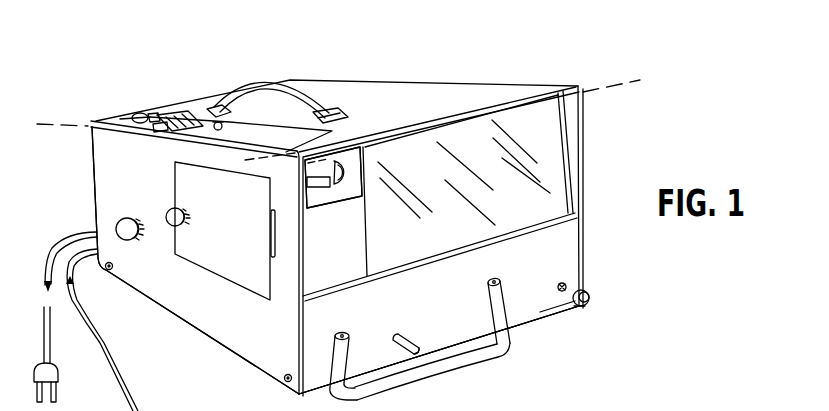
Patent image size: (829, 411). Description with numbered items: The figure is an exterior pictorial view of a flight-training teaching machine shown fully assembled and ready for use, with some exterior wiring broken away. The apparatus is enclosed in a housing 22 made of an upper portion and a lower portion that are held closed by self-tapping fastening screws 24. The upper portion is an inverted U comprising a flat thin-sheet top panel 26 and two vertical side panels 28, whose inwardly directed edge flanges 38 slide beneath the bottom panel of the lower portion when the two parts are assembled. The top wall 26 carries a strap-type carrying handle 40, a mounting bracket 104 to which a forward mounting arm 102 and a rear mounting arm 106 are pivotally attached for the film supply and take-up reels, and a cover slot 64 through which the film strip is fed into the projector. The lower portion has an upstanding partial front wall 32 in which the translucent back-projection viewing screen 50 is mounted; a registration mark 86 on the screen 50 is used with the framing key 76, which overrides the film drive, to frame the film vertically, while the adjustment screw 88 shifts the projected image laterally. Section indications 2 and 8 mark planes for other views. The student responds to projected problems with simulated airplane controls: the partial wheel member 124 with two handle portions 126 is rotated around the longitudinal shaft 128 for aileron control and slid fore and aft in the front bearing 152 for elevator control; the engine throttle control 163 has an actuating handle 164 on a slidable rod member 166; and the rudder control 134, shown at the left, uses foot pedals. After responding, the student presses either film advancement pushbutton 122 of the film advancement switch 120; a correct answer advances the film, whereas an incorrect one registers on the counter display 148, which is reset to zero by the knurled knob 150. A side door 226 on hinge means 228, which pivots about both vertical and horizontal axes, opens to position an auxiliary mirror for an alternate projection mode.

The section line 2- 2 is at (48, 123).
The section line 8- 8 is at (150, 208).
The housing 22 is at (494, 78).
The self-tapping fastening screws 24 is at (112, 271).
The top panel portion 26 is at (419, 95).
The side panel portions 28 is at (585, 180).
The partial front wall means 32 is at (558, 251).
The edge flanges 38 is at (579, 311).
The carrying handle 40 is at (293, 83).
The viewing screen means 50 is at (440, 196).
The cover slot 64 is at (209, 107).
The framing key member 76 is at (128, 218).
The registration mark 86 is at (504, 156).
The adjustment screw 88 is at (354, 238).
The forward mounting arm 102 is at (178, 110).
The mounting bracket 104 is at (160, 131).
The rear mounting arm 106 is at (153, 110).
The film advancement switch means 120 is at (434, 322).
The film advancement pushbuttons 122 is at (347, 308).
The partial wheel simulating member 124 is at (442, 355).
The handle portions 126 is at (347, 350).
The longitudinal shaft member 128 is at (421, 345).
The rudder control means 134 is at (125, 321).
The counter indicia display means 148 is at (320, 190).
The reset knob 150 is at (342, 173).
The front bearing 152 is at (404, 337).
The engine throttle control means 163 is at (564, 304).
The actuating handle 164 is at (589, 298).
The rod member 166 is at (567, 286).
The side door 226 is at (210, 255).
The hinge means 228 is at (269, 234).